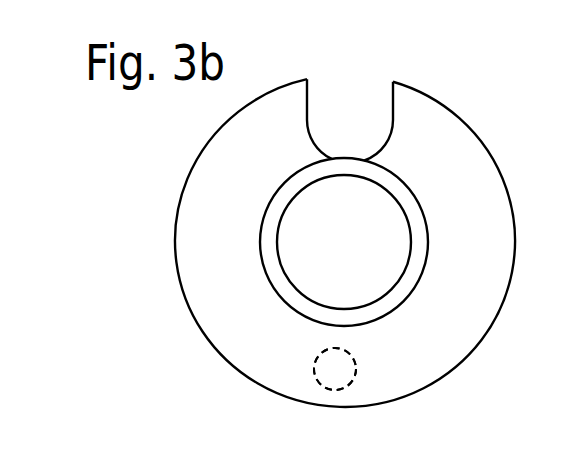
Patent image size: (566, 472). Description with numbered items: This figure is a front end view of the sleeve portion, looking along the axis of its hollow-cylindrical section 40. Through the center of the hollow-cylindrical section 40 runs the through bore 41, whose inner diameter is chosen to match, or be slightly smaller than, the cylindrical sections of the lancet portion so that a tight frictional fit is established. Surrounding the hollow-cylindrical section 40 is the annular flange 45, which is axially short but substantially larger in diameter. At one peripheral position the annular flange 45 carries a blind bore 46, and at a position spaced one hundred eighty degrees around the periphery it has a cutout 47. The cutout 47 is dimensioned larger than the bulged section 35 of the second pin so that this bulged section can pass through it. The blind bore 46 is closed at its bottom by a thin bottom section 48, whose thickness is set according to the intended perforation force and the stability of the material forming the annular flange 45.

The hollow-cylindrical section 40 is at (282, 284).
The through bore 41 is at (392, 265).
The annular flange 45 is at (480, 212).
The blind bore 46 is at (327, 375).
The cutout 47 is at (381, 113).
The bottom section 48 is at (353, 371).
The bulged section 35 is at (381, 466).